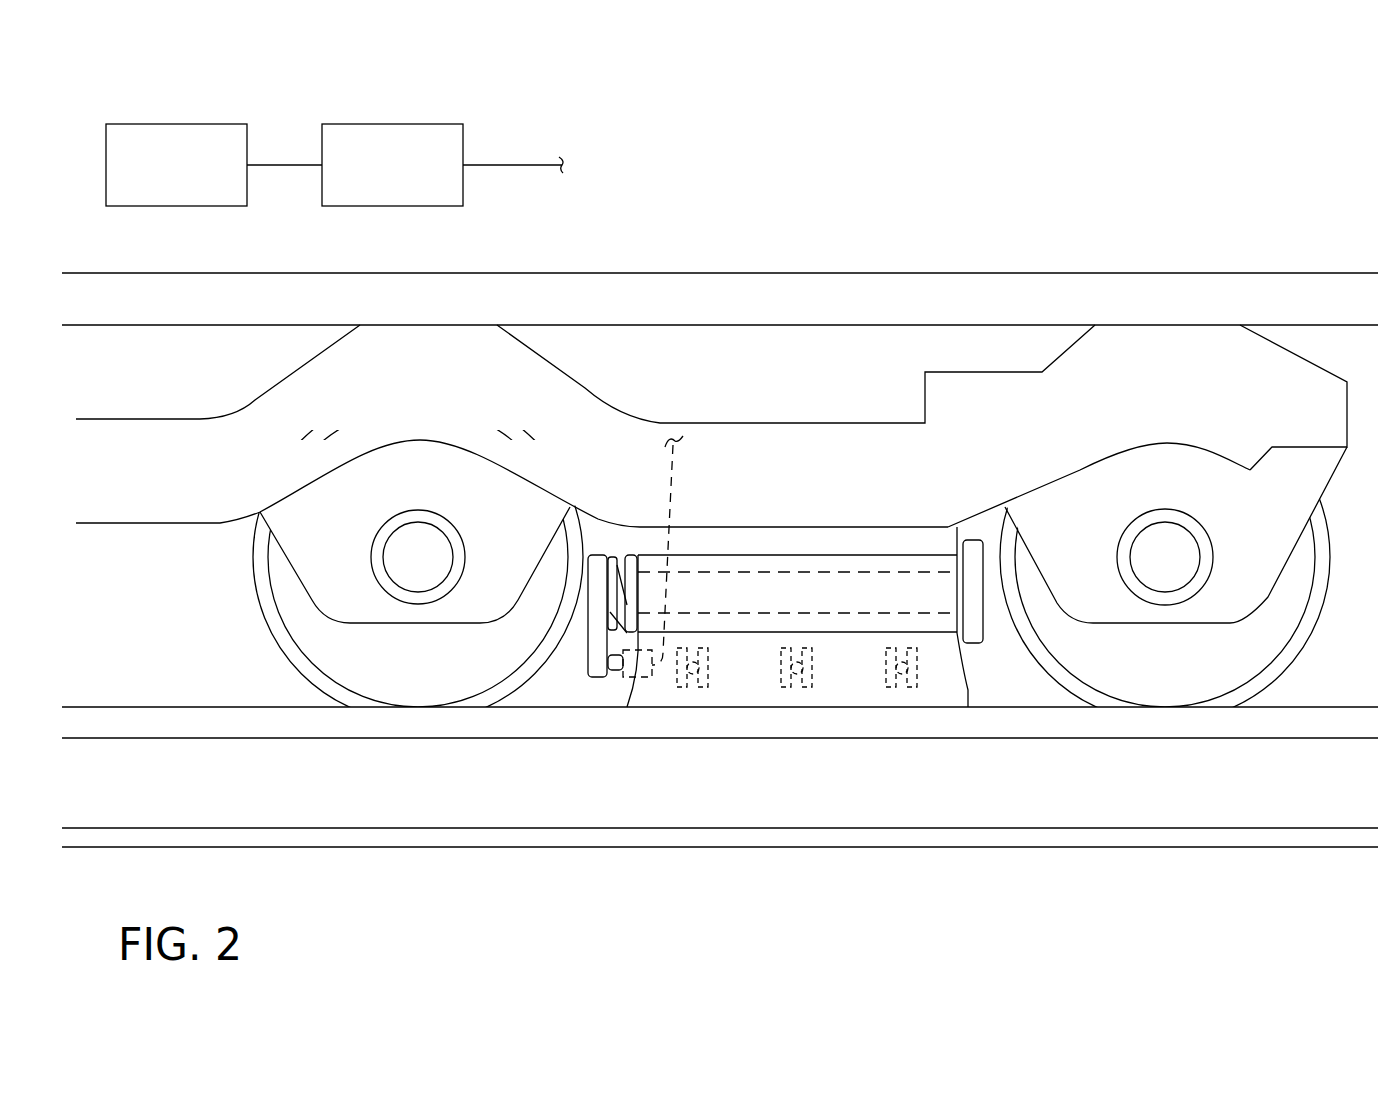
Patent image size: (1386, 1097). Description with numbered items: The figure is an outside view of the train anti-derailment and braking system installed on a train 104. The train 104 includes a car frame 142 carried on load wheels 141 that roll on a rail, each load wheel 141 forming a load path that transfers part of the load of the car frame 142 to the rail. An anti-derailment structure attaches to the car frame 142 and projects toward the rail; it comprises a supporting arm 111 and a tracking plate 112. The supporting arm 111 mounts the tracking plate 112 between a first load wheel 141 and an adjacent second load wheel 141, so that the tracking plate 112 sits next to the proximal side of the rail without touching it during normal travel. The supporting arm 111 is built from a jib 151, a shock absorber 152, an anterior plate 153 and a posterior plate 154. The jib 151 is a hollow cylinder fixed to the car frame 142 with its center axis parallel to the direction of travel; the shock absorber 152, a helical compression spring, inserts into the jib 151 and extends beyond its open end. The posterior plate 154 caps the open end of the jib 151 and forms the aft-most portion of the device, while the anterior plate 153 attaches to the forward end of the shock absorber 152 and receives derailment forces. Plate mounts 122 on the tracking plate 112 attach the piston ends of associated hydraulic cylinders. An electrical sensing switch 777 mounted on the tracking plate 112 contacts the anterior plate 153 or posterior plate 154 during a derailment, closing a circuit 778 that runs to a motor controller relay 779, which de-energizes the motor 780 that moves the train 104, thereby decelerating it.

The train 104 is at (620, 498).
The supporting arm 111 is at (922, 540).
The tracking plate 112 is at (968, 690).
The plate mounts 122 is at (888, 687).
The load wheel 141 is at (1278, 645).
The car frame 142 is at (970, 397).
The jib 151 is at (762, 562).
The shock absorber 152 is at (620, 566).
The anterior plate 153 is at (593, 662).
The posterior plate 154 is at (970, 632).
The electrical sensing switch 777 is at (613, 668).
The circuit 778 is at (516, 165).
The motor controller relay 779 is at (393, 124).
The motor 780 is at (176, 124).